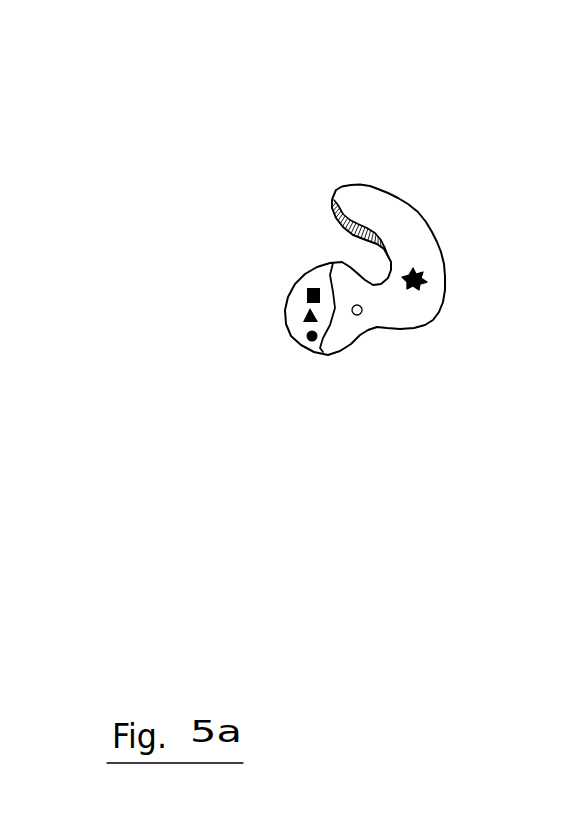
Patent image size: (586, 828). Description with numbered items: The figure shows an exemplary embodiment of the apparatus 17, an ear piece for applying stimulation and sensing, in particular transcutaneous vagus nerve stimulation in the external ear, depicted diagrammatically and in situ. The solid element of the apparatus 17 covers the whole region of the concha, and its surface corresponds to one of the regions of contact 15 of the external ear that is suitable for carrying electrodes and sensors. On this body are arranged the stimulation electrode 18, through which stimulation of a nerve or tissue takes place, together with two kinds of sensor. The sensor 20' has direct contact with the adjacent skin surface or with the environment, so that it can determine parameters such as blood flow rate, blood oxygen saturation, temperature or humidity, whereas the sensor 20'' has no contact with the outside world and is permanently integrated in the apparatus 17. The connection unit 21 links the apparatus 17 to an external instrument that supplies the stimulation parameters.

The apparatus 17 is at (378, 187).
The region of contact 15 is at (305, 287).
The stimulation electrode 18 is at (305, 316).
The sensor 20' is at (276, 374).
The sensor 20'' is at (482, 234).
The connection unit 21 is at (362, 313).